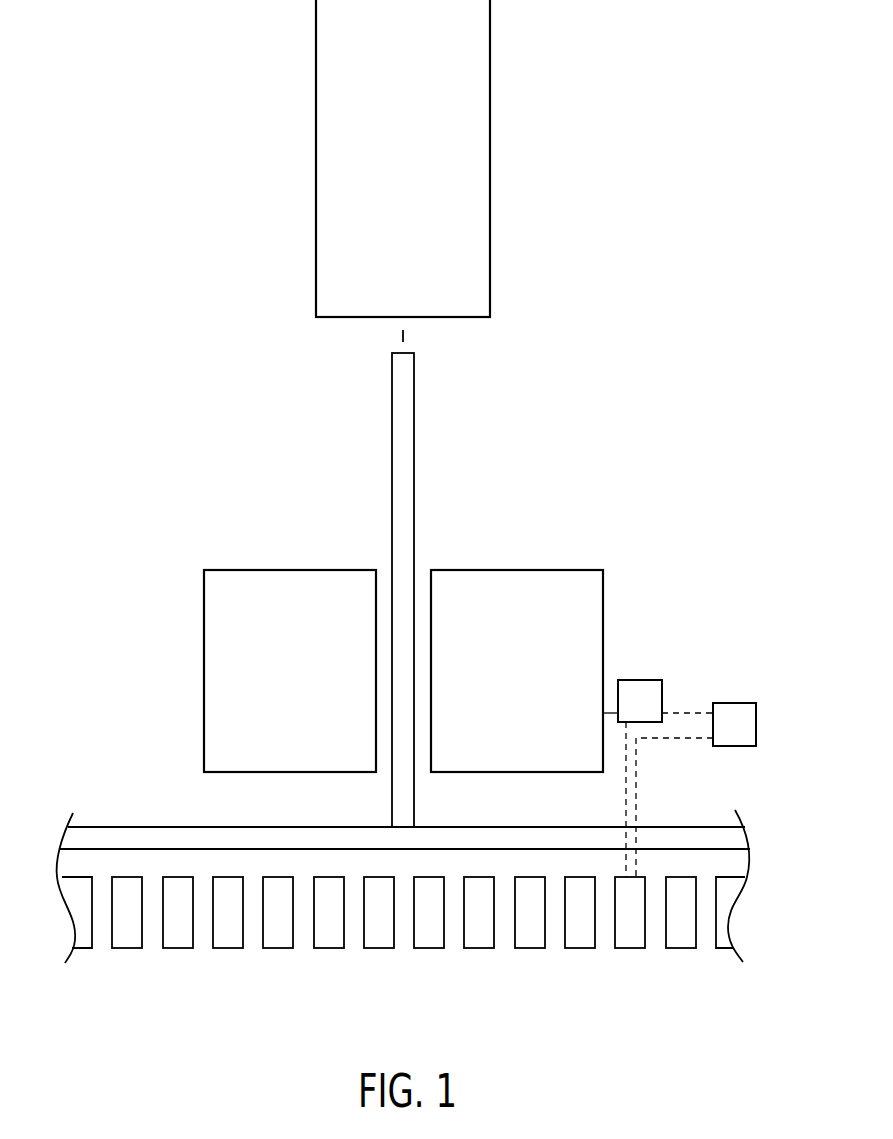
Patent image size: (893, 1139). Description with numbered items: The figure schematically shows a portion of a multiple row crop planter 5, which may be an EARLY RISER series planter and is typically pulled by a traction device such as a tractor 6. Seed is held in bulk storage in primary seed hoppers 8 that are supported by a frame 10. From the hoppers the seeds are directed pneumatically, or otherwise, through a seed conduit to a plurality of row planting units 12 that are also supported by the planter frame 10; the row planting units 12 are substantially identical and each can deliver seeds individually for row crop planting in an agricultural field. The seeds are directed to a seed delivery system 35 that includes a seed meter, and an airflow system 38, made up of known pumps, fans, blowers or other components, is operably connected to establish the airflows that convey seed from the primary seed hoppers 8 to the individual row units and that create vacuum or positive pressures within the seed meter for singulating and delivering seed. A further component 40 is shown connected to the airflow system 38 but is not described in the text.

The planter 5 is at (588, 336).
The tractor 6 is at (472, 200).
The primary seed hoppers 8 is at (297, 684).
The frame 10 is at (386, 434).
The row planting units 12 is at (278, 940).
The seed delivery system 35 is at (396, 950).
The airflow system 38 is at (653, 713).
The controller 40 is at (747, 736).